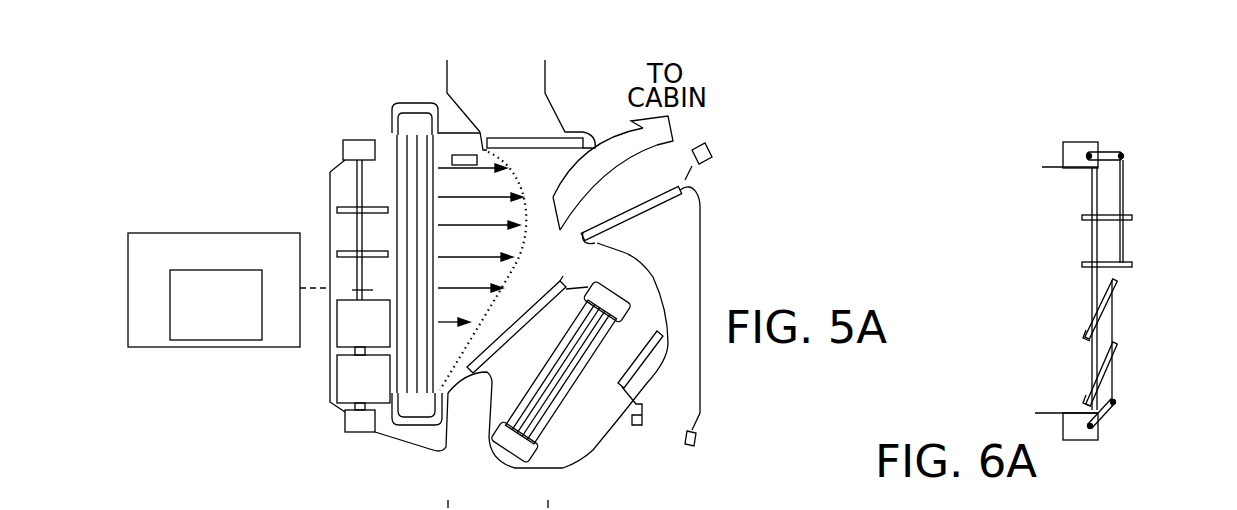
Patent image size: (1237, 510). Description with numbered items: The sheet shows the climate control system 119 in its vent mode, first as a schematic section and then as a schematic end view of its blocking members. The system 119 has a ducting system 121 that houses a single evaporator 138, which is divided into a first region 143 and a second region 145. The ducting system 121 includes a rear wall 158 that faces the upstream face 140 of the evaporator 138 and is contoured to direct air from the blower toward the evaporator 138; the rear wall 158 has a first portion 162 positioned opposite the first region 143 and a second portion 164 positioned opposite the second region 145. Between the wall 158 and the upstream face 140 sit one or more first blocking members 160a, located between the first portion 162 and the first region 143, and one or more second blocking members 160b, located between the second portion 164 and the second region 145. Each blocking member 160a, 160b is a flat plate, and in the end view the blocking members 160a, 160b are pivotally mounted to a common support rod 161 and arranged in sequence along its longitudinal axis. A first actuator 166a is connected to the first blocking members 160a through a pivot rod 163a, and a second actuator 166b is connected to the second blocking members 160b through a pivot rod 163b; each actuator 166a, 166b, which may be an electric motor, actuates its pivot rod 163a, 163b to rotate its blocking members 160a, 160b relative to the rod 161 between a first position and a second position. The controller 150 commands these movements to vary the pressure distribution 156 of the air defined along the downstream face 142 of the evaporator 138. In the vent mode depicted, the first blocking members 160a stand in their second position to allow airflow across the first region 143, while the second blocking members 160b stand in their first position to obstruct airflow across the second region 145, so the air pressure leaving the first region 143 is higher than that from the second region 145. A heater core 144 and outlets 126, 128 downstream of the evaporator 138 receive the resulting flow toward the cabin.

In FIG. 5A, the climate control system 119 is at (252, 98).
In FIG. 5A, the ducting system 121 is at (331, 157).
In FIG. 5A, the evaporator 138 is at (413, 178).
In FIG. 5A, the upstream face 140 is at (395, 197).
In FIG. 5A, the downstream face 142 is at (433, 235).
In FIG. 5A, the first region 143 is at (417, 205).
In FIG. 5A, the heater core 144 is at (553, 388).
In FIG. 5A, the second region 145 is at (417, 343).
In FIG. 5A, the controller 150 is at (175, 232).
In FIG. 5A, the pressure distribution 156 is at (530, 213).
In FIG. 5A, the defrost door 126 is at (693, 175).
In FIG. 5A, the floor outlet wall 128 is at (693, 423).
In FIG. 5A, the rear wall 158 is at (318, 351).
In FIG. 5A, the first blocking members 160a is at (348, 205).
In FIG. 6A, the first blocking members 160a is at (1132, 263).
In FIG. 5A, the second blocking members 160b is at (363, 322).
In FIG. 6A, the second blocking members 160b is at (1117, 282).
In FIG. 6A, the support rod 161 is at (1092, 202).
In FIG. 5A, the first portion 162 is at (348, 252).
In FIG. 6A, the first pivot rod 163a is at (1122, 183).
In FIG. 6A, the second pivot rod 163b is at (1112, 385).
In FIG. 5A, the second portion 164 is at (330, 368).
In FIG. 6A, the first actuator 166a is at (1063, 157).
In FIG. 6A, the second actuator 166b is at (1063, 428).